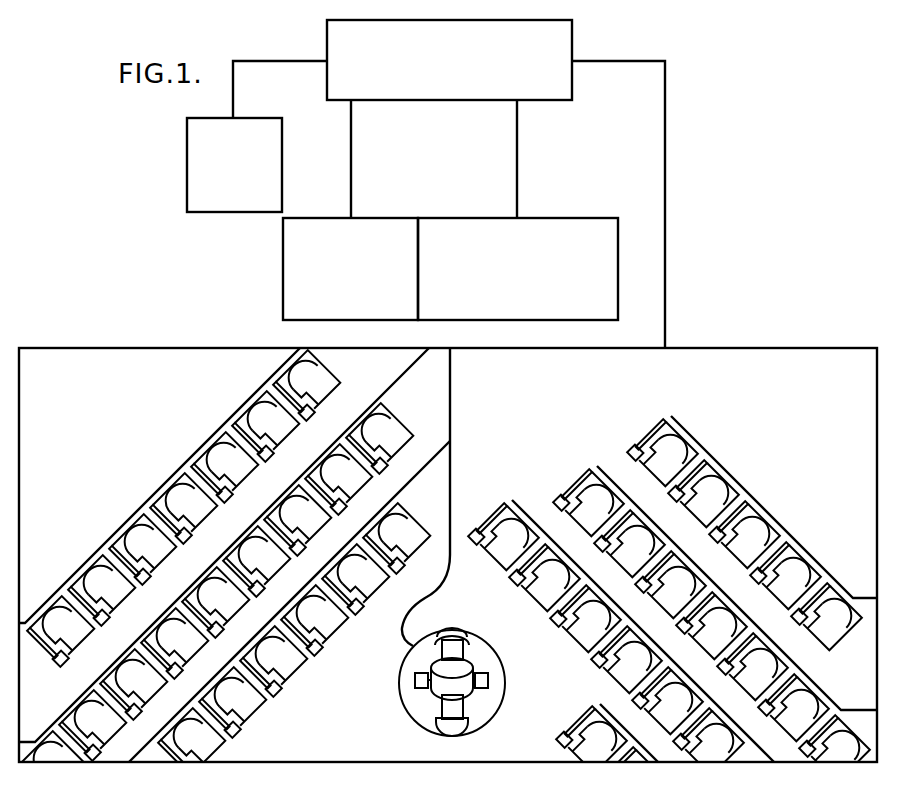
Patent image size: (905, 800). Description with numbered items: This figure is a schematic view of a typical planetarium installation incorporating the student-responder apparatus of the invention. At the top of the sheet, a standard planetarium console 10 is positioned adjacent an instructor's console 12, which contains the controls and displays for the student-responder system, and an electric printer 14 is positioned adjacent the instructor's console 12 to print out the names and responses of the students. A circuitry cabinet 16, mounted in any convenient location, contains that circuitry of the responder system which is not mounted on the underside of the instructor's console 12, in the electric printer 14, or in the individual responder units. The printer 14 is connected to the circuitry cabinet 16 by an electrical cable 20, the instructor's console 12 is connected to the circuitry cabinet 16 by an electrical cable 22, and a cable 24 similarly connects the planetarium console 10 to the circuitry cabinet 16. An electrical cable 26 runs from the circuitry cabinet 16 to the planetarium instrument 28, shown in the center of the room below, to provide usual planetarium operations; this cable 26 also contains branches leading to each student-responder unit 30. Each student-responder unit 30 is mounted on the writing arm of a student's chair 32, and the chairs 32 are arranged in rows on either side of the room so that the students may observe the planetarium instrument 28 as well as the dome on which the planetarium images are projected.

The planetarium console 10 is at (567, 218).
The instructor's console 12 is at (380, 218).
The electric printer 14 is at (186, 133).
The circuitry cabinet 16 is at (572, 40).
The electrical cable 20 is at (272, 59).
The electrical cable 22 is at (351, 147).
The cable 24 is at (517, 150).
The electrical cable 26 is at (665, 190).
The planetarium instrument 28 is at (490, 667).
The student-responder unit 30 is at (394, 570).
The student's chair 32 is at (325, 382).